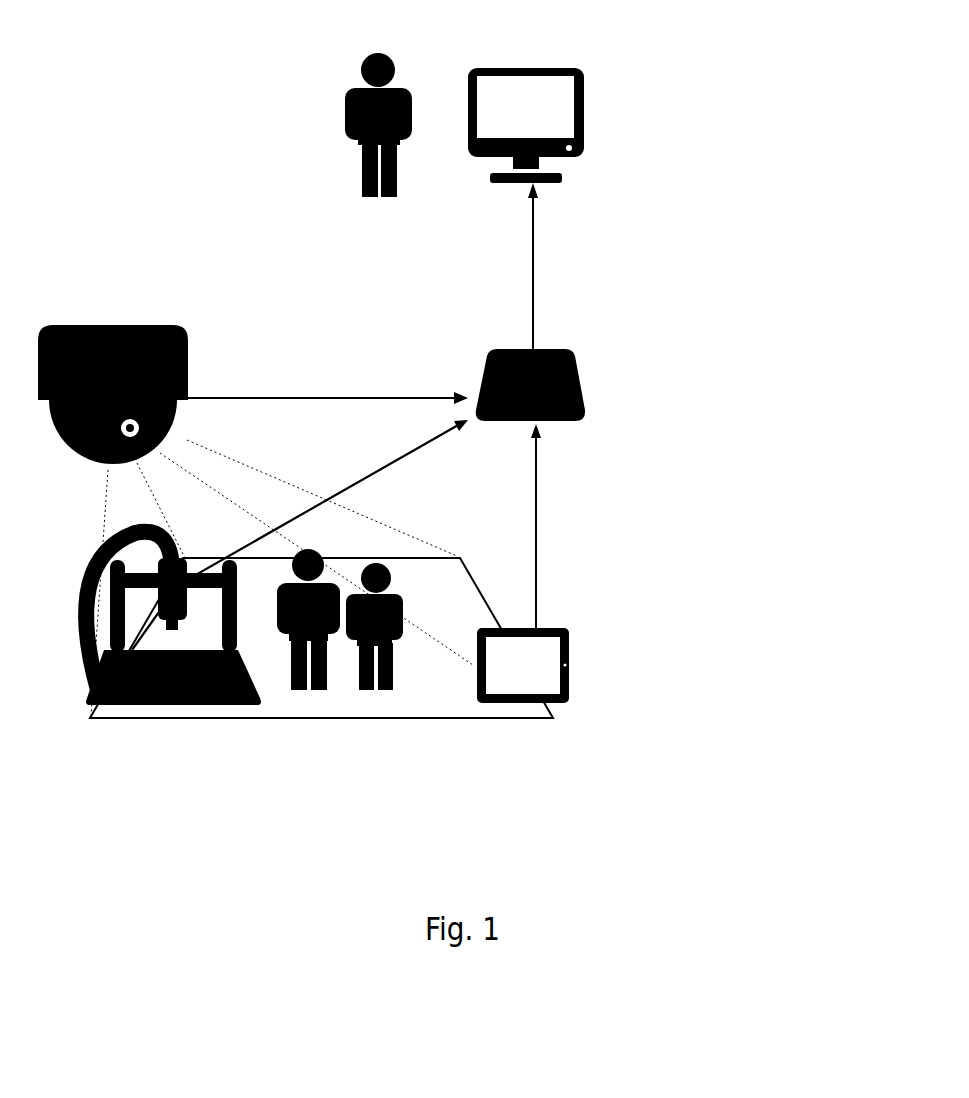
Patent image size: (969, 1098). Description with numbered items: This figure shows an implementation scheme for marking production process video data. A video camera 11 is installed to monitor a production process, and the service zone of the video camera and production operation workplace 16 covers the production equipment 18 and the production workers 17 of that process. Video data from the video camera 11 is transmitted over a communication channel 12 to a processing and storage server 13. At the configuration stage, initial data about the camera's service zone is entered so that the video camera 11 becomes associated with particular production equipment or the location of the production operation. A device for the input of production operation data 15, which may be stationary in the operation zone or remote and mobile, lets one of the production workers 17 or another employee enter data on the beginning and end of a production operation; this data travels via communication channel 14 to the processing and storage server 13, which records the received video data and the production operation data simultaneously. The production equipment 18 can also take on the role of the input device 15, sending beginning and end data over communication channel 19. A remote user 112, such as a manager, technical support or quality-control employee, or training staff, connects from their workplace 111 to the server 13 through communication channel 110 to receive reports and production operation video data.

The video camera 11 is at (63, 330).
The communication channel 12 is at (222, 398).
The processing and storage server 13 is at (574, 356).
The communication channel 14 is at (540, 492).
The device for the input of production operation data 15 is at (547, 630).
The service zone of the video camera and production operation workplace 16 is at (470, 697).
The production workers 17 is at (310, 692).
The production equipment 18 is at (117, 703).
The communication channel 19 is at (395, 472).
The communication channel 110 is at (535, 258).
The workplace 111 is at (580, 60).
The remote user 112 is at (398, 70).